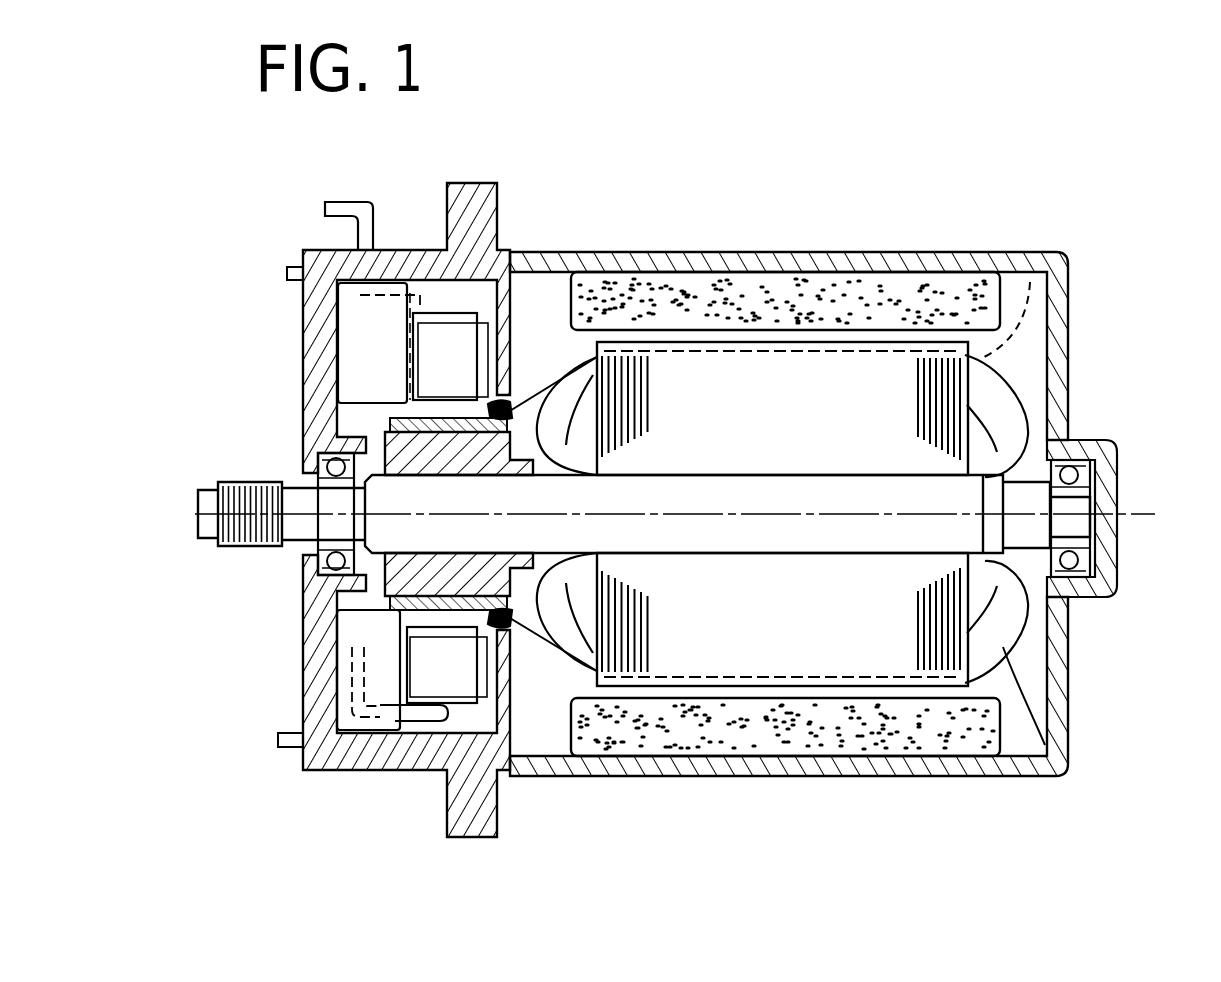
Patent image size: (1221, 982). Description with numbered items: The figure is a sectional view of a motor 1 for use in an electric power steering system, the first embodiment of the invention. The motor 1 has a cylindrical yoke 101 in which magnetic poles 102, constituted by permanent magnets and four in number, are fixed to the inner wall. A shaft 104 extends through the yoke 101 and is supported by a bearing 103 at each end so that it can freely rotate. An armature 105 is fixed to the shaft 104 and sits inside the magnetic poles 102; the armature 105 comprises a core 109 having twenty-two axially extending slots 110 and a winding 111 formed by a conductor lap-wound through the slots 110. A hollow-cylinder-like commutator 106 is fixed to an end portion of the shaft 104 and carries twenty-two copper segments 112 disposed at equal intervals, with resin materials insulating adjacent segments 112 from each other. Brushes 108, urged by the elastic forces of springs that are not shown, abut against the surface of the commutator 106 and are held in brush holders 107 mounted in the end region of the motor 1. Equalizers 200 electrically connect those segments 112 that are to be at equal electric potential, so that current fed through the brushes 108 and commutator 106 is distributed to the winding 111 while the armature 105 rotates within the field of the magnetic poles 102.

The motor 1 is at (796, 123).
The cylindrical yoke 101 is at (618, 256).
The magnetic poles 102 is at (750, 300).
The bearing 103 is at (323, 555).
The shaft 104 is at (1018, 491).
The armature 105 is at (857, 380).
The commutator 106 is at (373, 603).
The brush holders 107 is at (428, 338).
The brushes 108 is at (420, 408).
The core 109 is at (893, 657).
The slots 110 is at (1033, 245).
The winding 111 is at (1060, 778).
The segments 112 is at (393, 425).
The equalizers 200 is at (532, 372).